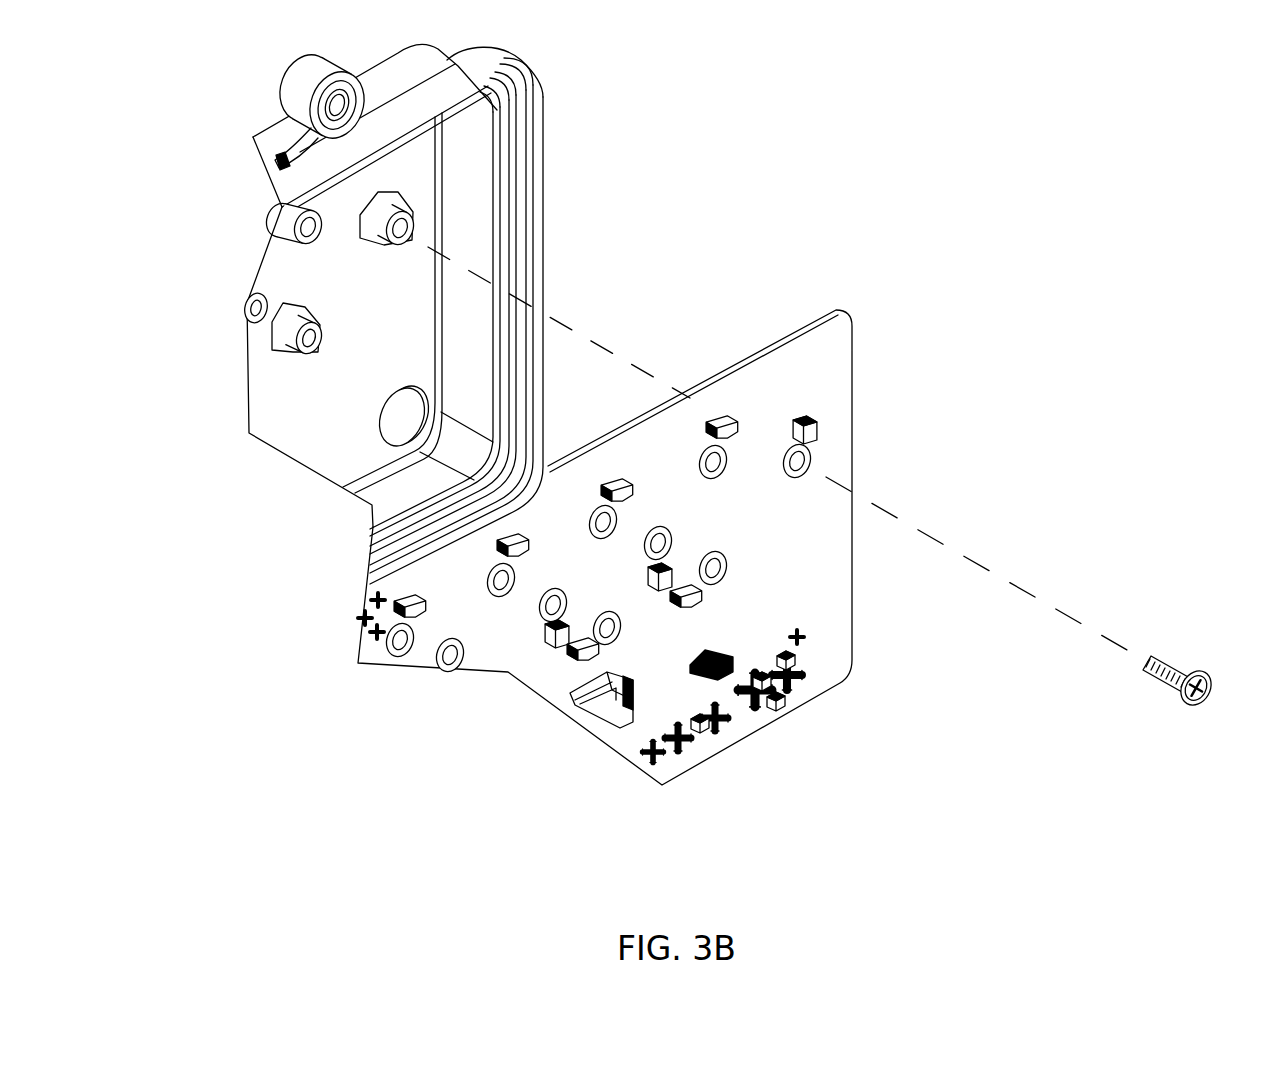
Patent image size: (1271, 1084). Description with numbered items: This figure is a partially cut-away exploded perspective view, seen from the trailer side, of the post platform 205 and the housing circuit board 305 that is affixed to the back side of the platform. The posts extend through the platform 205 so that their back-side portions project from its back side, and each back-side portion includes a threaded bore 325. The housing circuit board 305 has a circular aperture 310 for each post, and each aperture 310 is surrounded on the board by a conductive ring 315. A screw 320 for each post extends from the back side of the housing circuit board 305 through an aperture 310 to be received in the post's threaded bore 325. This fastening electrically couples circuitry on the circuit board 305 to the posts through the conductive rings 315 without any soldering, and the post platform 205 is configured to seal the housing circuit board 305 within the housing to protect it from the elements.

The platform 205 is at (255, 363).
The housing circuit board 305 is at (830, 357).
The circular aperture 310 is at (725, 563).
The conductive ring 315 is at (818, 454).
The screw 320 is at (1172, 660).
The threaded bore 325 is at (386, 246).